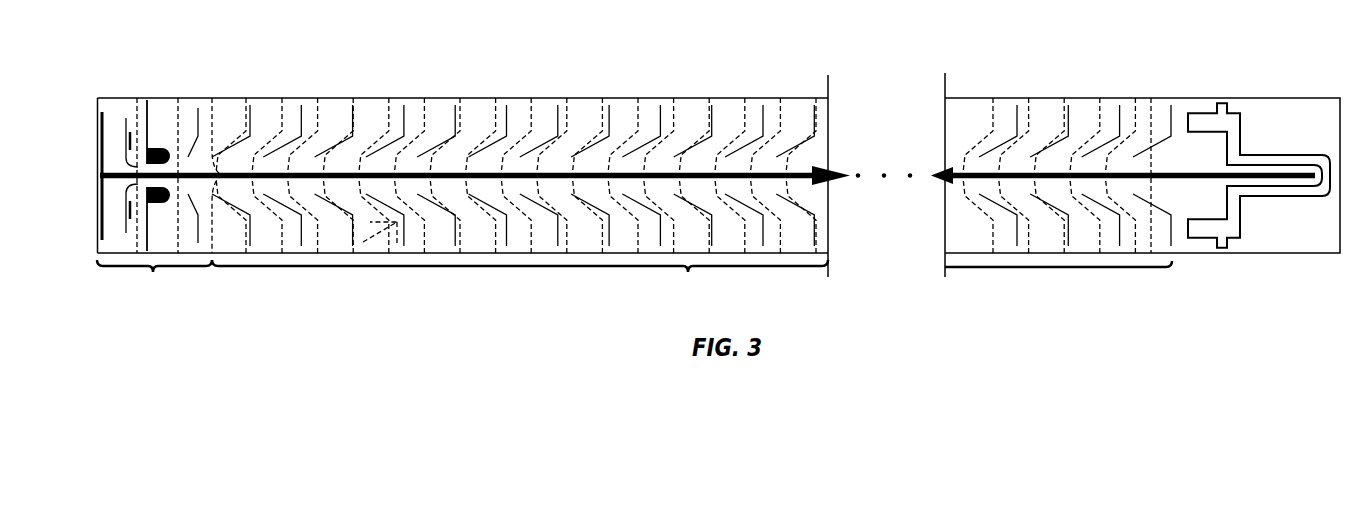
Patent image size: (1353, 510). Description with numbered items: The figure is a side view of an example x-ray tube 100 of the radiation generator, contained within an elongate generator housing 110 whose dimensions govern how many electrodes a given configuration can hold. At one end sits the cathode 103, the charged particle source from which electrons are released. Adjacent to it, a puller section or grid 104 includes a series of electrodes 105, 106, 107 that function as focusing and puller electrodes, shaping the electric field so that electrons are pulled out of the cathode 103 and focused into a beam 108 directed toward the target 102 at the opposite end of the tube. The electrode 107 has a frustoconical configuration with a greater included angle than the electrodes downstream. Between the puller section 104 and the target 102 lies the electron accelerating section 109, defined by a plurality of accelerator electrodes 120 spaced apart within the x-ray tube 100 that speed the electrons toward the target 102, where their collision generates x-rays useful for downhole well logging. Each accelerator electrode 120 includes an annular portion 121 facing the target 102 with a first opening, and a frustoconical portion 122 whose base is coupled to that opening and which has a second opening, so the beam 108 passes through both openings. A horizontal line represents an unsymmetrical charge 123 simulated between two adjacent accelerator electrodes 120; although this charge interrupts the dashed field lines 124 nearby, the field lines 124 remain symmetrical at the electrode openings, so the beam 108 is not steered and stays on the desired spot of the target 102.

The x-ray tube 100 is at (1140, 33).
The target 102 is at (1270, 130).
The cathode 103 is at (97, 137).
The puller section or grid 104 is at (155, 274).
The electrode 105 is at (125, 115).
The electrode 106 is at (151, 110).
The electrode 107 is at (200, 112).
The beam 108 is at (1180, 172).
The electron accelerating section 109 is at (690, 274).
The elongate generator housing 110 is at (1248, 97).
The accelerator electrode 120 is at (410, 100).
The annular portion 121 is at (555, 113).
The frustoconical portion 122 is at (653, 130).
The unsymmetrical charge 123 is at (372, 222).
The field line 124 is at (323, 112).